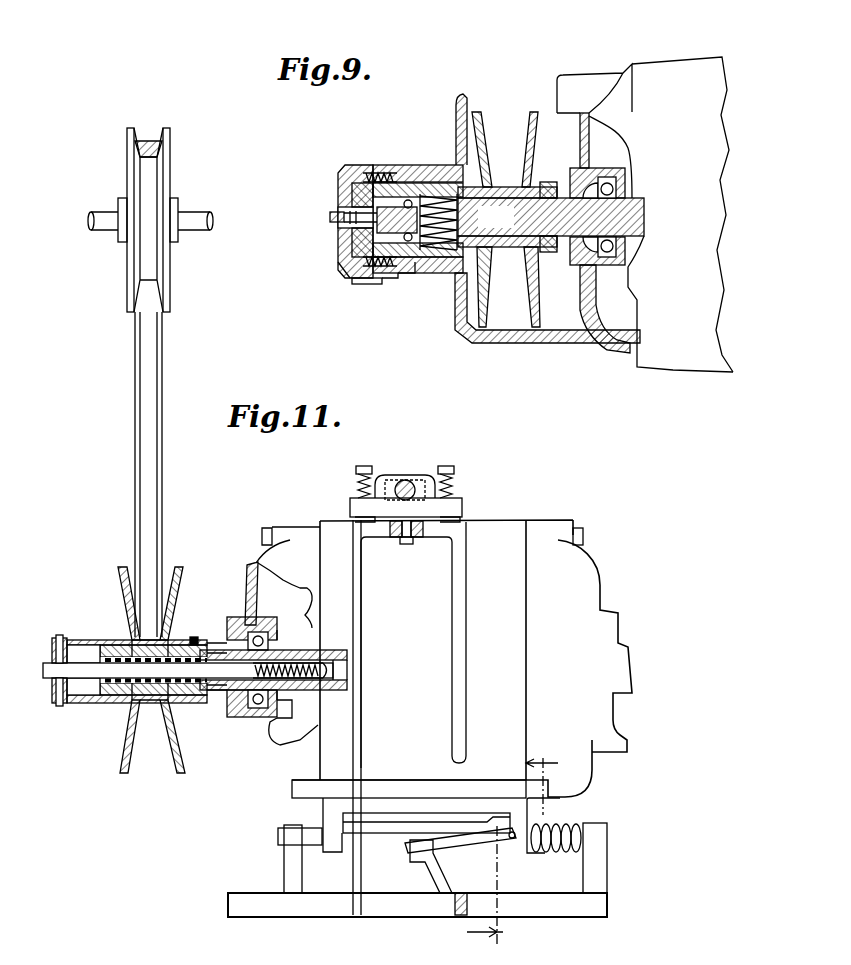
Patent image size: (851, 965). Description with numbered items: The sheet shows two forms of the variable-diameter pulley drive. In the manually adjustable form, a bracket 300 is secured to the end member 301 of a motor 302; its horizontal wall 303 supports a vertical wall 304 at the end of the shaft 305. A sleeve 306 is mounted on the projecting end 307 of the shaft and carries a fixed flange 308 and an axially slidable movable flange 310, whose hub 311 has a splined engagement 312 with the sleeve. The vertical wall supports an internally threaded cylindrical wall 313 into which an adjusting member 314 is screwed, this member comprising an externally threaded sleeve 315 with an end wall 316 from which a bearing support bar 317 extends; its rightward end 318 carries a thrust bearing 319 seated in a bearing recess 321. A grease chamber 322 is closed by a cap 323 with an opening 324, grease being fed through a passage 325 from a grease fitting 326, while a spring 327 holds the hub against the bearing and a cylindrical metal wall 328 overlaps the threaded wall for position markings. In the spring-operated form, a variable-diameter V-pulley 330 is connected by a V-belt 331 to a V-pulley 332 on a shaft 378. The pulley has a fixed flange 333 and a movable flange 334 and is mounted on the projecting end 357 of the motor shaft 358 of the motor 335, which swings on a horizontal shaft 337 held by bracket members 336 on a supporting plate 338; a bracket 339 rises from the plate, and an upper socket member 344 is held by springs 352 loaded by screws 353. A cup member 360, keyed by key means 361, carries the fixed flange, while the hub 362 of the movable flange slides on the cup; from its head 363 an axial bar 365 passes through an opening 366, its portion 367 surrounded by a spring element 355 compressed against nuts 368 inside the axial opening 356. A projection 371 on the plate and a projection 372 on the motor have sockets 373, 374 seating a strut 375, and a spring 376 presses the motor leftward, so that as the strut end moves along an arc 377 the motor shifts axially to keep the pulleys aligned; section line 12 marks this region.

In FIG. 9, the bracket 300 is at (458, 318).
In FIG. 9, the end member 301 is at (598, 298).
In FIG. 9, the motor 302 is at (680, 80).
In FIG. 9, the horizontal wall 303 is at (525, 345).
In FIG. 9, the vertical wall 304 is at (452, 160).
In FIG. 9, the shaft 305 is at (633, 185).
In FIG. 9, the sleeve 306 is at (485, 268).
In FIG. 9, the projecting end 307 is at (435, 270).
In FIG. 9, the fixed flange 308 is at (578, 135).
In FIG. 9, the movable flange 310 is at (485, 140).
In FIG. 9, the hub 311 is at (420, 170).
In FIG. 9, the keyed or splined engagement 312 is at (460, 272).
In FIG. 9, the internally threaded cylindrical wall 313 is at (408, 185).
In FIG. 9, the adjusting member 314 is at (345, 172).
In FIG. 9, the externally threaded sleeve 315 is at (408, 275).
In FIG. 9, the end wall 316 is at (355, 250).
In FIG. 9, the bearing support or axial bar 317 is at (345, 212).
In FIG. 9, the rightward end 318 is at (365, 280).
In FIG. 9, the thrust bearing 319 is at (395, 205).
In FIG. 9, the bearing recess 321 is at (551, 217).
In FIG. 9, the grease chamber 322 is at (352, 266).
In FIG. 9, the cap 323 is at (398, 202).
In FIG. 9, the opening 324 is at (352, 198).
In FIG. 9, the passage 325 is at (350, 240).
In FIG. 9, the grease fitting 326 is at (330, 217).
In FIG. 9, the spring 327 is at (505, 187).
In FIG. 9, the cylindrical metal wall 328 is at (385, 278).
In FIG. 11, the variable-diameter V-pulley 330 is at (152, 742).
In FIG. 11, the V-belt 331 is at (162, 450).
In FIG. 11, the V-pulley 332 is at (160, 165).
In FIG. 11, the fixed flange 333 is at (182, 580).
In FIG. 11, the axially movable flange 334 is at (120, 575).
In FIG. 11, the motor 335 is at (500, 540).
In FIG. 11, the bracket members 336 is at (335, 822).
In FIG. 11, the horizontal shaft or bar 337 is at (295, 842).
In FIG. 11, the supporting plate 338 is at (320, 905).
In FIG. 11, the bracket 339 is at (467, 618).
In FIG. 11, the upper socket member 344 is at (403, 478).
In FIG. 11, the springs 352 is at (455, 495).
In FIG. 11, the screws 353 is at (450, 470).
In FIG. 11, the spring element 355 is at (225, 672).
In FIG. 11, the axial opening 356 is at (215, 675).
In FIG. 11, the projecting end 357 is at (140, 662).
In FIG. 11, the motor shaft 358 is at (322, 652).
In FIG. 11, the cup member 360 is at (115, 645).
In FIG. 11, the key means 361 is at (130, 670).
In FIG. 11, the sleeve portion or hub 362 is at (100, 641).
In FIG. 11, the end wall or head 363 is at (52, 687).
In FIG. 11, the axial bar 365 is at (52, 664).
In FIG. 11, the opening 366 is at (100, 680).
In FIG. 11, the portion 367 is at (262, 718).
In FIG. 11, the nuts 368 is at (287, 626).
In FIG. 11, the projection 371 is at (418, 862).
In FIG. 11, the projection 372 is at (530, 830).
In FIG. 11, the socket 373 is at (410, 858).
In FIG. 11, the socket 374 is at (485, 852).
In FIG. 11, the swinging strut or bar 375 is at (470, 832).
In FIG. 11, the spring 376 is at (580, 845).
In FIG. 11, the arc 377 is at (490, 796).
In FIG. 11, the shaft 378 is at (100, 222).
In FIG. 11, the section line 12 is at (513, 852).